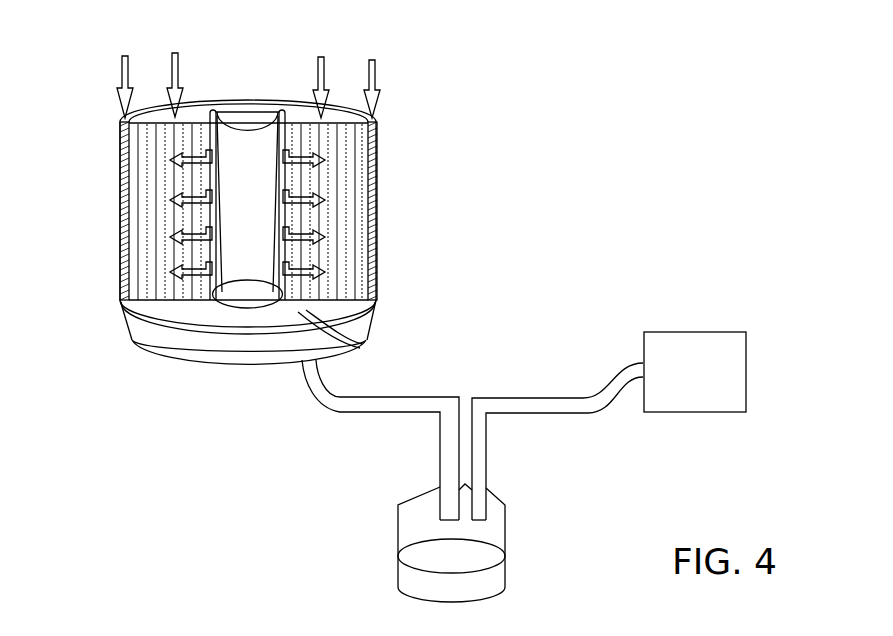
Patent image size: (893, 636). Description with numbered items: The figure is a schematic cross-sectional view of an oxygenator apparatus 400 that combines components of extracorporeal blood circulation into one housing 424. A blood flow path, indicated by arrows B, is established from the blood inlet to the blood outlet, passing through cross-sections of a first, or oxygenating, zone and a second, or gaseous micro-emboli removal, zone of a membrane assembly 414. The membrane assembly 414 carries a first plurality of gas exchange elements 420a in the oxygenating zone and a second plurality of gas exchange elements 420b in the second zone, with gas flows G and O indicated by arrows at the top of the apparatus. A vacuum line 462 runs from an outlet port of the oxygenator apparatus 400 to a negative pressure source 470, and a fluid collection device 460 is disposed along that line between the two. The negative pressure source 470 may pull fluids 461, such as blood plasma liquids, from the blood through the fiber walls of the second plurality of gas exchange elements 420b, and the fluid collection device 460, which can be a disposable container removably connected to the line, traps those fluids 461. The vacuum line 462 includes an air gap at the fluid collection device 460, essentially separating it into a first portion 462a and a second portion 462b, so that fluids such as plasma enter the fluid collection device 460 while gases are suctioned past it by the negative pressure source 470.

The oxygenator apparatus 400 is at (559, 142).
The membrane assembly 414 is at (358, 348).
The first plurality of gas exchange elements 420a is at (353, 175).
The second plurality of gas exchange elements 420b is at (373, 218).
The reactor housing 424 is at (375, 270).
The fluid collection device 460 is at (398, 522).
The fluids 461 is at (490, 577).
The vacuum line 462 is at (533, 398).
The first portion of the vacuum line 462a is at (401, 414).
The second portion of the vacuum line 462b is at (553, 414).
The negative pressure source 470 is at (694, 330).
The gas flow G is at (121, 76).
The oxidant flow O is at (171, 60).
The blood flow path arrows B is at (278, 102).